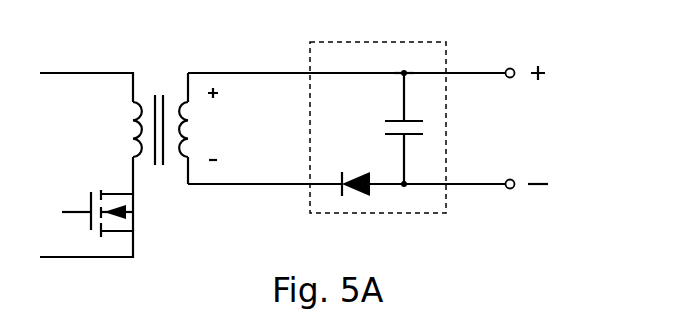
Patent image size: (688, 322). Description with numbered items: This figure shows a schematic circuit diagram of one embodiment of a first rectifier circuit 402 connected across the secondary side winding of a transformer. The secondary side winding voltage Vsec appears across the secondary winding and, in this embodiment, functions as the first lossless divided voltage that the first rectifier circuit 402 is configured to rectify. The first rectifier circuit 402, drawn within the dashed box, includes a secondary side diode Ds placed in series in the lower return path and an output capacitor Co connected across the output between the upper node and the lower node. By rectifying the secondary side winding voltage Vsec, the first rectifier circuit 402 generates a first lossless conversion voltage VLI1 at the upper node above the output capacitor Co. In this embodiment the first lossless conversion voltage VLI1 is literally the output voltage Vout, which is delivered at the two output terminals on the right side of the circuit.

The first rectifier circuit 402 is at (349, 40).
The secondary side winding voltage Vsec is at (212, 128).
The output voltage Vout is at (537, 127).
The secondary side diode Ds is at (422, 165).
The output capacitor Co is at (390, 130).
The first lossless conversion voltage VLI1 is at (406, 60).